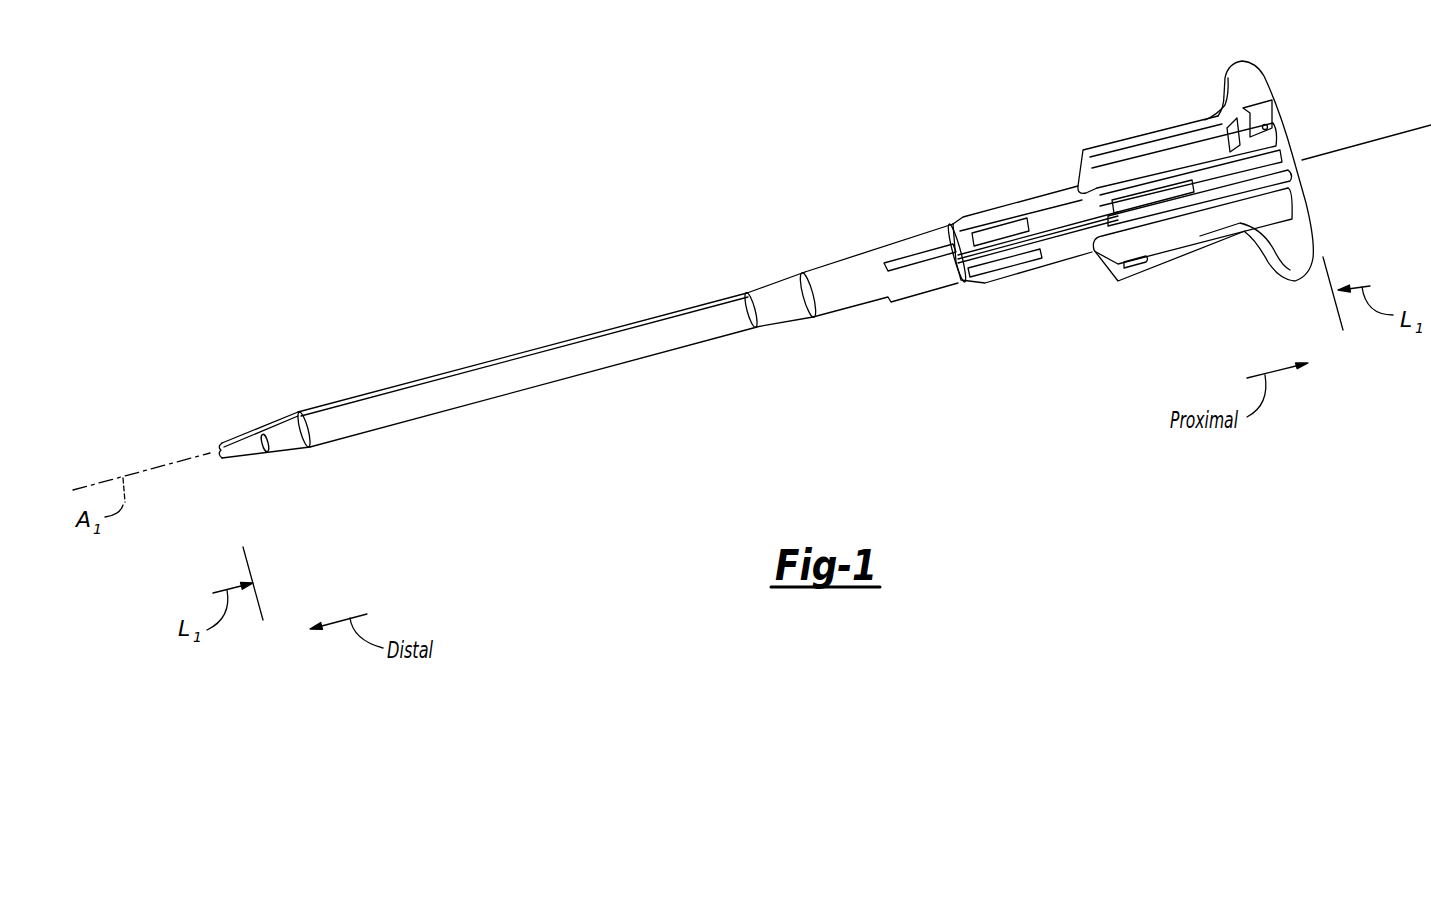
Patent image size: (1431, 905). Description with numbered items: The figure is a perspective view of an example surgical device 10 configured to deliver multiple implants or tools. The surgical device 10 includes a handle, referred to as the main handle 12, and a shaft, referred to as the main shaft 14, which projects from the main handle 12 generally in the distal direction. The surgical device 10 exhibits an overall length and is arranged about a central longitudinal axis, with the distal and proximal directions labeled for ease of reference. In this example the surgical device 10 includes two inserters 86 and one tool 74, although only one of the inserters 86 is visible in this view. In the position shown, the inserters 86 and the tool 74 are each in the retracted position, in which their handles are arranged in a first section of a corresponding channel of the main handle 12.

The surgical device 10 is at (677, 110).
The main handle 12 is at (1126, 94).
The main shaft 14 is at (477, 306).
The tool 74 is at (1306, 175).
The inserter 86 is at (1273, 100).